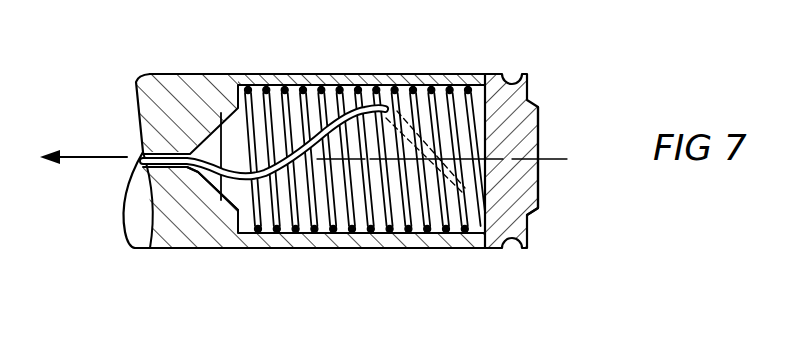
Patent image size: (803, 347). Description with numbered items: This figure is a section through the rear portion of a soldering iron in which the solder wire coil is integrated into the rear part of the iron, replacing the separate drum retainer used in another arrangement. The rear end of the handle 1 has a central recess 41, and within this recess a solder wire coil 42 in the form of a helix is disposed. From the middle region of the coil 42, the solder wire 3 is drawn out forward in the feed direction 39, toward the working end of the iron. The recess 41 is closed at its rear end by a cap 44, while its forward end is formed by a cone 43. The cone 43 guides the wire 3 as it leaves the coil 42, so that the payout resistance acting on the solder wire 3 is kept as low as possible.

The handle 1 is at (180, 216).
The solder wire 3 is at (221, 113).
The feed direction 39 is at (91, 154).
The central recess 41 is at (474, 98).
The solder wire coil 42 is at (341, 84).
The cone 43 is at (218, 202).
The cap 44 is at (521, 197).